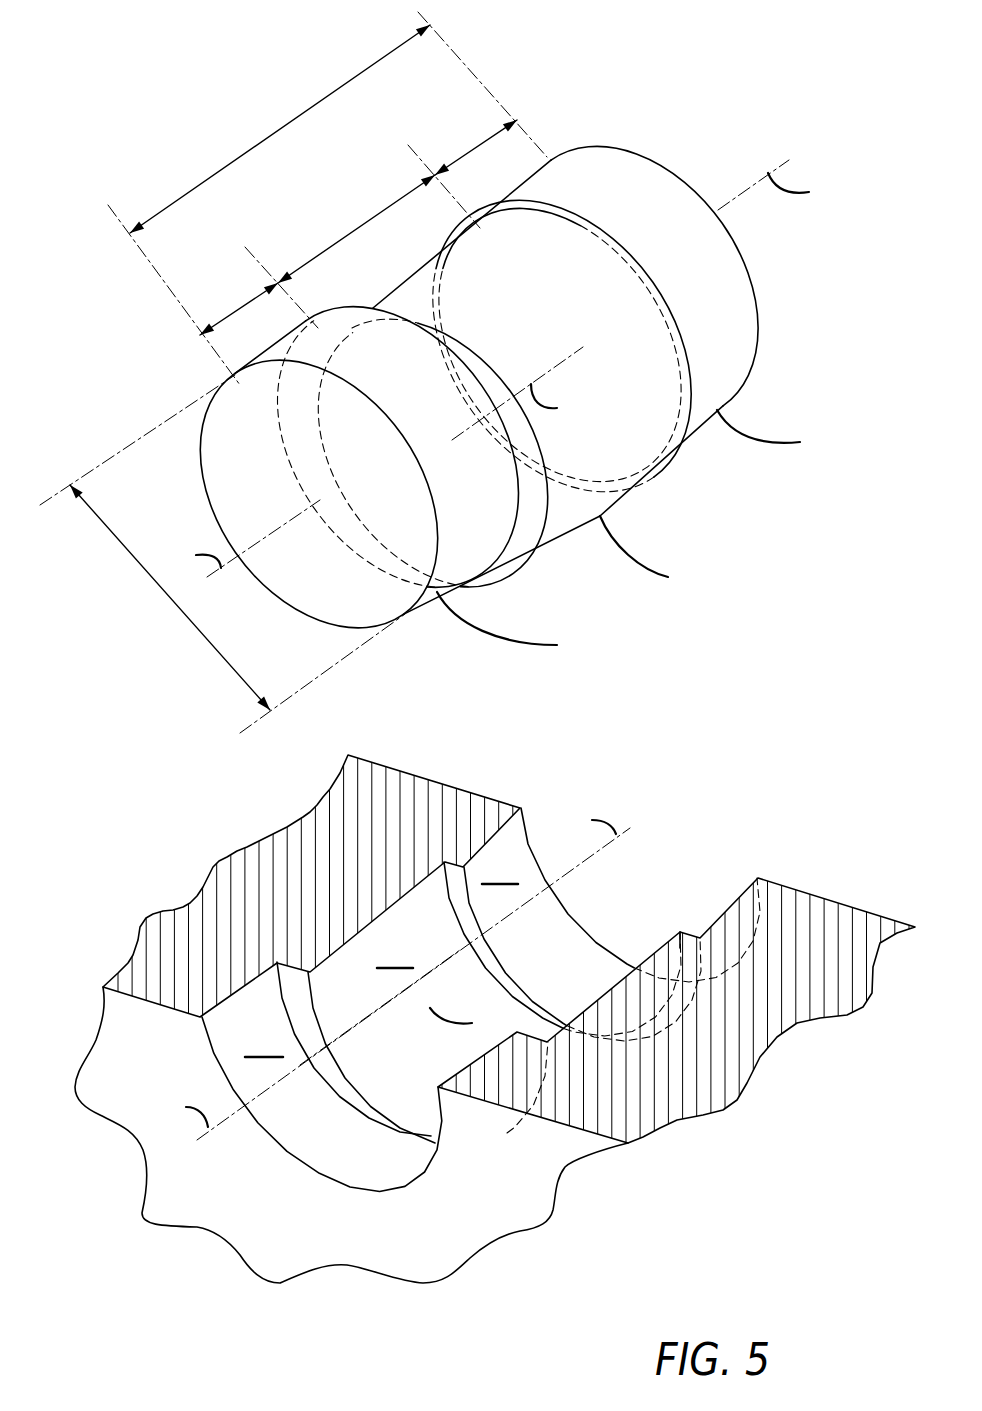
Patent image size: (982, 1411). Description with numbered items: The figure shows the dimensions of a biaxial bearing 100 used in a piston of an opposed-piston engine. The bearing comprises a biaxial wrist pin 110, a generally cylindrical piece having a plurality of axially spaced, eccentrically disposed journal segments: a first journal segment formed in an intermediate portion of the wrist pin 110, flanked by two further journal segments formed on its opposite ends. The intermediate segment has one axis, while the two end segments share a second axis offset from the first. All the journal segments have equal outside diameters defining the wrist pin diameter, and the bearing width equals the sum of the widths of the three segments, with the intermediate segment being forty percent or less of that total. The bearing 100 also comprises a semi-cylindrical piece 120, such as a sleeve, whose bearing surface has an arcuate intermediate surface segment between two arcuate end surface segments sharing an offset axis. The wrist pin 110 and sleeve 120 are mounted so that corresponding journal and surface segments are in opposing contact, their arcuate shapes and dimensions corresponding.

The biaxial bearing 100 is at (843, 756).
The biaxial wrist pin 110 is at (733, 102).
The semi-cylindrical piece 120 is at (253, 1168).